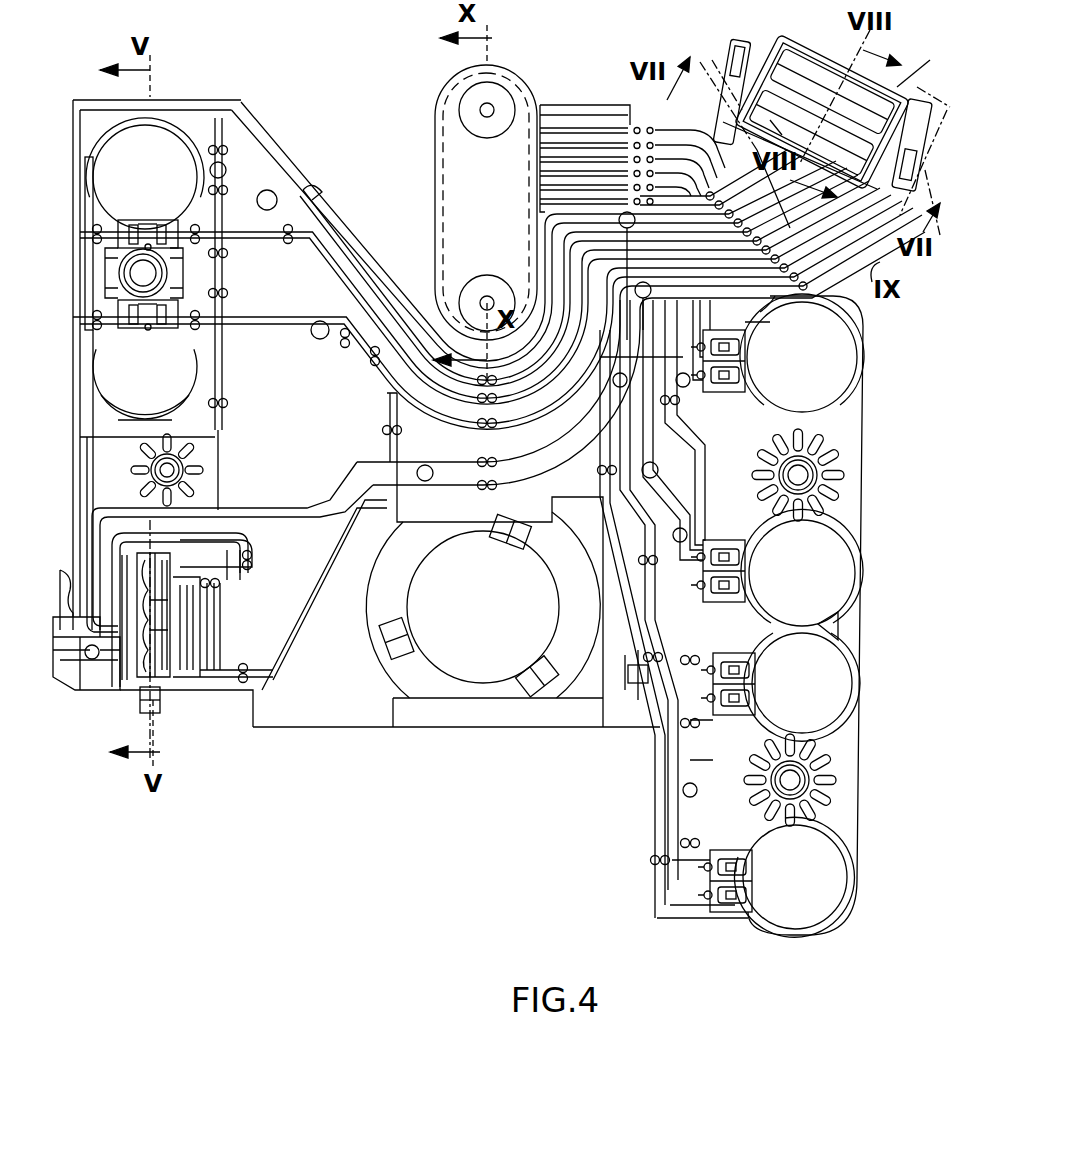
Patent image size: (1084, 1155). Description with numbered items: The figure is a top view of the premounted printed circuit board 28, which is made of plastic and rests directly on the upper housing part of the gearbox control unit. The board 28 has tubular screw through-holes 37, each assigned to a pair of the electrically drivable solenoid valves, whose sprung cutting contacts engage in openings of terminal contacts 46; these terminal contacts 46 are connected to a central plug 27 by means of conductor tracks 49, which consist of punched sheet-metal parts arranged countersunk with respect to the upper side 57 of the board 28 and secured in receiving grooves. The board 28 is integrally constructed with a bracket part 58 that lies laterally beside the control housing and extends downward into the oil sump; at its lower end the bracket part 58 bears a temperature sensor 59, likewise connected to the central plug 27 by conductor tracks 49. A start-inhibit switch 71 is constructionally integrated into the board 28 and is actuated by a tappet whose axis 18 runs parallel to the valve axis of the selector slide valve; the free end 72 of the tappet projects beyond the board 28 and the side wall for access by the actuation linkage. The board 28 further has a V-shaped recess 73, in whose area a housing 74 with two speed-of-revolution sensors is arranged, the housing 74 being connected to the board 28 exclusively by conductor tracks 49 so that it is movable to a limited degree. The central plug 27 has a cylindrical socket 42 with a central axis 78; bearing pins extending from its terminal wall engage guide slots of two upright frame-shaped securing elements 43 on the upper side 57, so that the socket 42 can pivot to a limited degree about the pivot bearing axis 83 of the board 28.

The axis of the tappet 18 is at (160, 520).
The central plug 27 is at (905, 75).
The printed circuit board 28 is at (556, 95).
The screw through-hole 37 is at (178, 273).
The socket 42 is at (895, 98).
The securing elements 43 is at (740, 95).
The terminal contacts 46 is at (160, 226).
The conductor tracks 49 is at (305, 232).
The upper side of the printed circuit board 57 is at (378, 268).
The bracket part 58 is at (90, 715).
The temperature sensor 59 is at (65, 622).
The start-inhibit switch 71 is at (195, 554).
The free end of the tappet 72 is at (165, 720).
The V-shaped recess 73 is at (405, 290).
The housing 74 is at (428, 150).
The central axis of the central plug 78 is at (832, 80).
The pivot bearing axis 83 is at (823, 135).